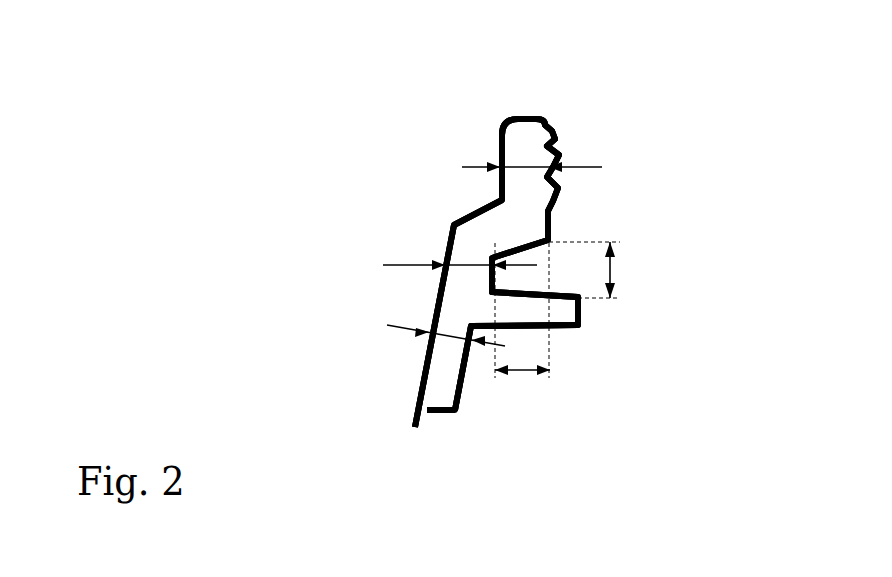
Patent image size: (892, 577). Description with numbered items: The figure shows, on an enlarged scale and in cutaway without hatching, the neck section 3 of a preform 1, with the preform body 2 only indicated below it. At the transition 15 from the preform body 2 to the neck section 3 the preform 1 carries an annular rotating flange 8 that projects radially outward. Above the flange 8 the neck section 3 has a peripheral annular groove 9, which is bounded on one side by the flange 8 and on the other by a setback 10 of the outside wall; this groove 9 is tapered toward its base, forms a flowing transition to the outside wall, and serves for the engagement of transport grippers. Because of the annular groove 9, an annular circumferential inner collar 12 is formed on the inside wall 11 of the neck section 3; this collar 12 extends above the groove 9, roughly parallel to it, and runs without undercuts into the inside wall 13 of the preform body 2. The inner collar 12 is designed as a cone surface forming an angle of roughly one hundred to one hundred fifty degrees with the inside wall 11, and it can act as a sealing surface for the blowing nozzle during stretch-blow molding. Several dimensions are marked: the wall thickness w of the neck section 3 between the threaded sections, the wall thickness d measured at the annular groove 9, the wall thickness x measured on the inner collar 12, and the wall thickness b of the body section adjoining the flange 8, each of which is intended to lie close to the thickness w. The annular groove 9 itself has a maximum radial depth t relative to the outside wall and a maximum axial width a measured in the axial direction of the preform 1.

The preform 1 is at (303, 216).
The preform body 2 is at (427, 410).
The neck section 3 is at (545, 123).
The annular rotating flange 8 is at (567, 315).
The peripheral annular groove 9 is at (582, 271).
The setback 10 is at (562, 256).
The inside wall of the neck section 11 is at (491, 136).
The inner collar 12 is at (496, 247).
The inside wall of the preform body 13 is at (430, 303).
The transition 15 is at (478, 328).
The wall thickness of the neck section w is at (526, 167).
The wall thickness based on the annular groove d is at (468, 263).
The wall thickness at the inner collar x is at (487, 228).
The wall thickness of the preform body section b is at (450, 338).
The maximum radial depth of the annular groove t is at (520, 372).
The maximum axial width of the annular groove a is at (617, 270).